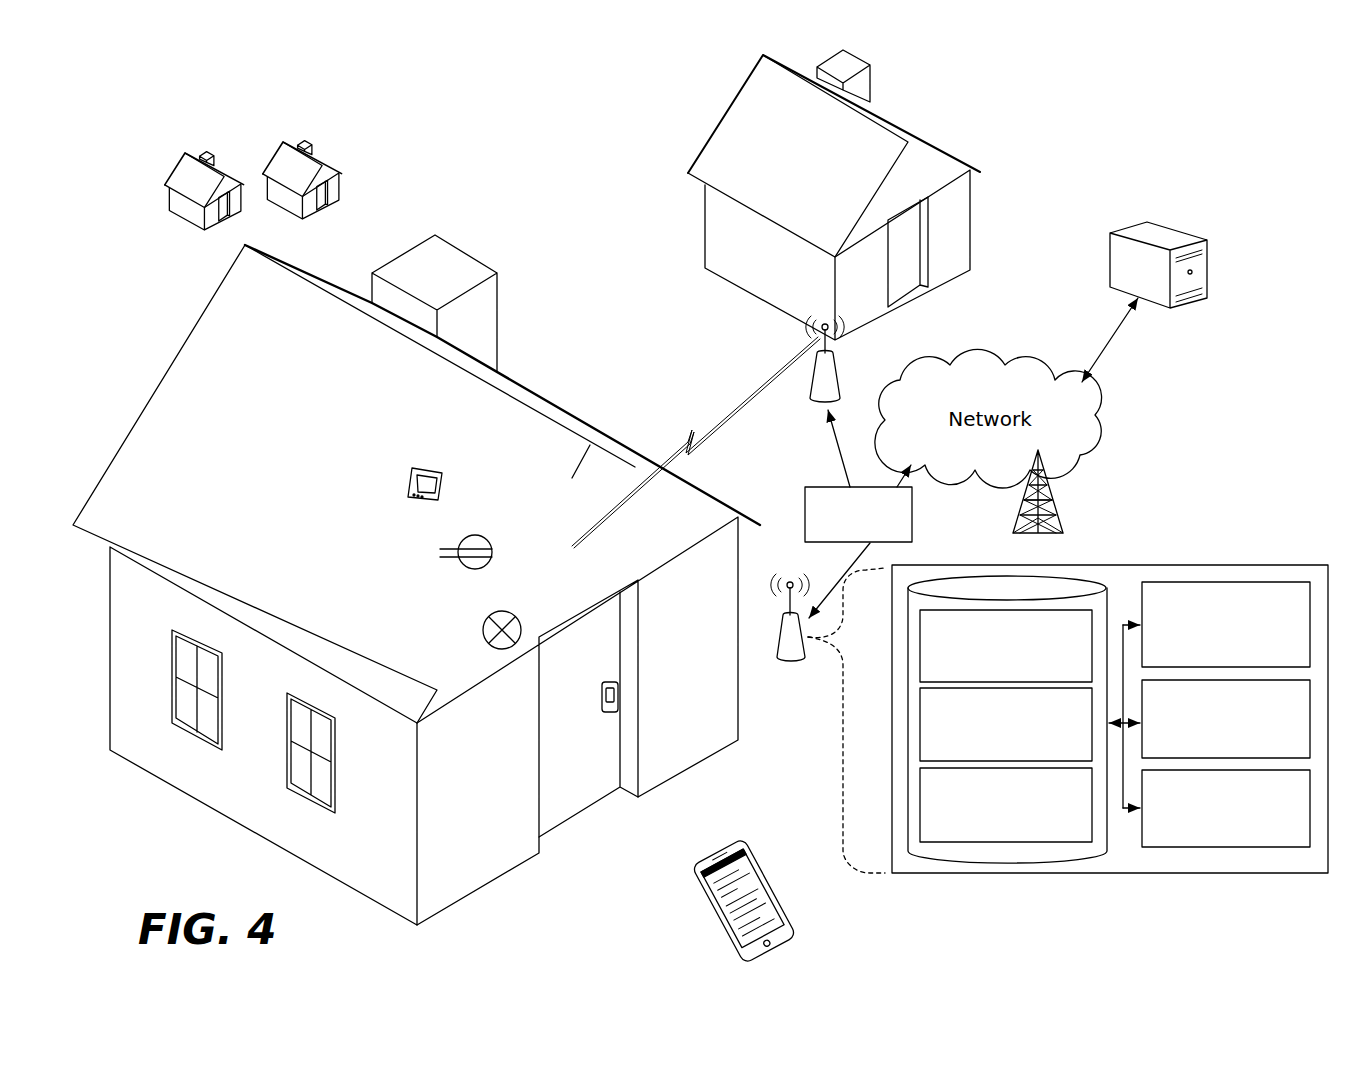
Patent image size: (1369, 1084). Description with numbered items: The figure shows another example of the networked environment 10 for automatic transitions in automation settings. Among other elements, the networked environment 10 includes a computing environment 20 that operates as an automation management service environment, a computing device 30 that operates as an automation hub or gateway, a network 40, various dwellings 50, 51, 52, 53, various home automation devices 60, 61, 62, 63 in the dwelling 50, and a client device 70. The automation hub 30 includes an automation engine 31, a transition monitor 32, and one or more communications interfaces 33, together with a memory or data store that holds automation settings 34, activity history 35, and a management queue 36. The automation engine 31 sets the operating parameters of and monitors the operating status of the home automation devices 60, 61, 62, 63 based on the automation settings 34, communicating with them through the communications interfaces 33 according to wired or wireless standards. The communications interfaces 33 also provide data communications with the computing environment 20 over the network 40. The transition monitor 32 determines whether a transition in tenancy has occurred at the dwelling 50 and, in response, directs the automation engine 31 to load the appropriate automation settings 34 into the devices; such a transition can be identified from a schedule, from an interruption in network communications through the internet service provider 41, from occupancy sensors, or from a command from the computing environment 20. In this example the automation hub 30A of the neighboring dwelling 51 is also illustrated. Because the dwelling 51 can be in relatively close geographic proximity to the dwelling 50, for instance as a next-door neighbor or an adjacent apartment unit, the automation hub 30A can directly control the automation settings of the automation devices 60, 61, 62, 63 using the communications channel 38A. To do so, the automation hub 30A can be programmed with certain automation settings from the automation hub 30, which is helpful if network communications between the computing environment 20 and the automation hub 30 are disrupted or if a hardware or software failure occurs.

The networked environment 10 is at (178, 88).
The computing environment 20 is at (1163, 230).
The computing device 30 is at (803, 658).
The automation hub 30A is at (832, 383).
The automation engine 31 is at (1215, 656).
The transition monitor 32 is at (1215, 751).
The communications interfaces 33 is at (1215, 841).
The automation settings 34 is at (995, 676).
The activity history 35 is at (995, 757).
The management queue 36 is at (995, 837).
The communications channel 38A is at (716, 420).
The network 40 is at (1070, 457).
The internet service provider (ISP) 41 is at (848, 533).
The dwelling 50 is at (138, 472).
The dwelling 51 is at (732, 118).
The dwelling 52 is at (183, 174).
The dwelling 53 is at (283, 157).
The home automation device 60 is at (602, 701).
The home automation device 61 is at (486, 637).
The home automation device 62 is at (470, 567).
The home automation device 63 is at (412, 487).
The client device 70 is at (772, 892).